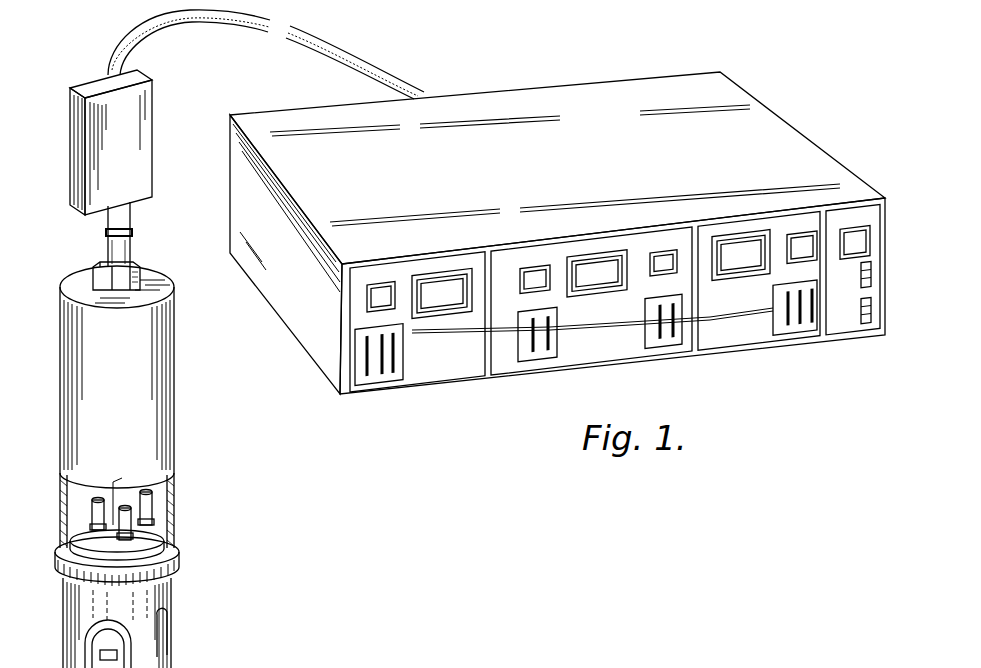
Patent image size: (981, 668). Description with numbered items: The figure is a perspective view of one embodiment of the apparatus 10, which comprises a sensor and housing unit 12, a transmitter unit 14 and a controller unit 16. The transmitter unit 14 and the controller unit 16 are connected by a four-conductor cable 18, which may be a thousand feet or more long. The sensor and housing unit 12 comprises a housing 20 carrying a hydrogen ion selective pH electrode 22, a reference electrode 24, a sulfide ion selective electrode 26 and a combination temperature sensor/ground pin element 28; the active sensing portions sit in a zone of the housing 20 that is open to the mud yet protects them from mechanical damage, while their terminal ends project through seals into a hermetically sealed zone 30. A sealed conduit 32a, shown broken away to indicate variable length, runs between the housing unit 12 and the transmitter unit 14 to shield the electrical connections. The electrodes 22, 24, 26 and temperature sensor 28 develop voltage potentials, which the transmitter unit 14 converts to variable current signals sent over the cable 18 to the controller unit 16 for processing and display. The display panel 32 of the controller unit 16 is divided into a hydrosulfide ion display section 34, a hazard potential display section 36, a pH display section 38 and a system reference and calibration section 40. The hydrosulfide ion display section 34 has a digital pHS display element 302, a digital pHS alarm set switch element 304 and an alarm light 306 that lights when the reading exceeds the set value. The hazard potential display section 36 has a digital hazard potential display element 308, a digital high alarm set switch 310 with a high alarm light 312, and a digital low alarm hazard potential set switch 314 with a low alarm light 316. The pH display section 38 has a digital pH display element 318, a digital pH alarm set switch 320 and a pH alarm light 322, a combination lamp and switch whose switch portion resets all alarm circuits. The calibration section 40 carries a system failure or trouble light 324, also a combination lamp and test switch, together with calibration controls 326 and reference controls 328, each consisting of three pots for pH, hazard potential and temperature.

The apparatus embodiment 10 is at (404, 51).
The sensor and housing unit 12 is at (172, 450).
The transmitter unit 14 is at (72, 183).
The controller unit 16 is at (442, 390).
The four-conductor cable 18 is at (247, 38).
The housing 20 is at (172, 647).
The hydrogen ion selective (pH) electrode 22 is at (97, 518).
The reference electrode 24 is at (152, 508).
The sulfide ion selective electrode 26 is at (177, 572).
The combination temperature sensor/ground pin element 28 is at (60, 573).
The hermetically sealed zone 30 is at (167, 533).
The display panel 32 is at (603, 318).
The sealed conduit 32a is at (131, 242).
The hydrosulfide ion display section 34 is at (353, 283).
The hazard potential display section 36 is at (577, 247).
The pH display section 38 is at (755, 227).
The system reference and calibration section 40 is at (878, 312).
The digital pHS display element 302 is at (432, 294).
The digital pHS alarm set switch element 304 is at (387, 382).
The alarm light 306 is at (393, 282).
The digital hazard potential display element 308 is at (608, 262).
The digital high alarm set switch 310 is at (677, 345).
The high alarm light 312 is at (660, 253).
The digital low alarm hazard potential set switch 314 is at (548, 360).
The hazard potential low alarm light 316 is at (523, 272).
The digital pH display element 318 is at (731, 263).
The digital pH alarm set switch 320 is at (792, 329).
The pH alarm light 322 is at (816, 231).
The system failure or trouble light 324 is at (860, 233).
The calibration controls 326 is at (872, 272).
The reference controls 328 is at (875, 330).